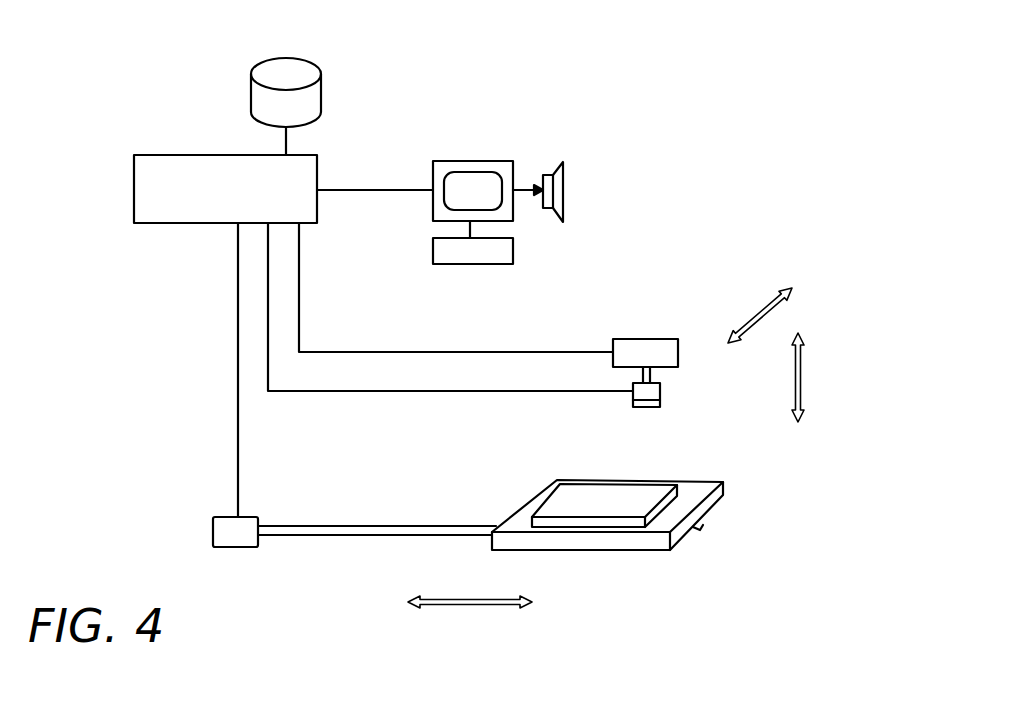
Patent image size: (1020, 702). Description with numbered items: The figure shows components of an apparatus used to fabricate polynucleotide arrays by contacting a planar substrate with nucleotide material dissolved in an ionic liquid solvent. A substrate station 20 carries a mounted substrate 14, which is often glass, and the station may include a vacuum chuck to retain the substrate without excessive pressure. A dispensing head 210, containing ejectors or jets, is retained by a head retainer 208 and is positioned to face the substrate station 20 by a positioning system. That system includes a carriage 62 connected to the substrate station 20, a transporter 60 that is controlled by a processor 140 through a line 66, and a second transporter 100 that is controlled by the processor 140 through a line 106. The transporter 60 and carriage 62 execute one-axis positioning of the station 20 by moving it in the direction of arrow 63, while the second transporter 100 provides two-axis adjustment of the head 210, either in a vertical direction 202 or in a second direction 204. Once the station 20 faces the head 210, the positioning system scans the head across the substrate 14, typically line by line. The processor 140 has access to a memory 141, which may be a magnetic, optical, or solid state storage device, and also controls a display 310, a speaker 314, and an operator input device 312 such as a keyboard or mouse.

The substrate 14 is at (598, 500).
The substrate station 20 is at (598, 552).
The transporter 60 is at (227, 547).
The carriage 62 is at (422, 535).
The arrow 63 is at (442, 607).
The line 66 is at (237, 470).
The second transporter 100 is at (640, 339).
The line 106 is at (430, 352).
The processor 140 is at (147, 223).
The memory 141 is at (320, 78).
The vertical direction 202 is at (803, 383).
The direction 204 is at (753, 310).
The head retainer 208 is at (662, 393).
The dispensing head 210 is at (660, 403).
The display 310 is at (465, 161).
The operator input device 312 is at (433, 248).
The speaker 314 is at (567, 187).